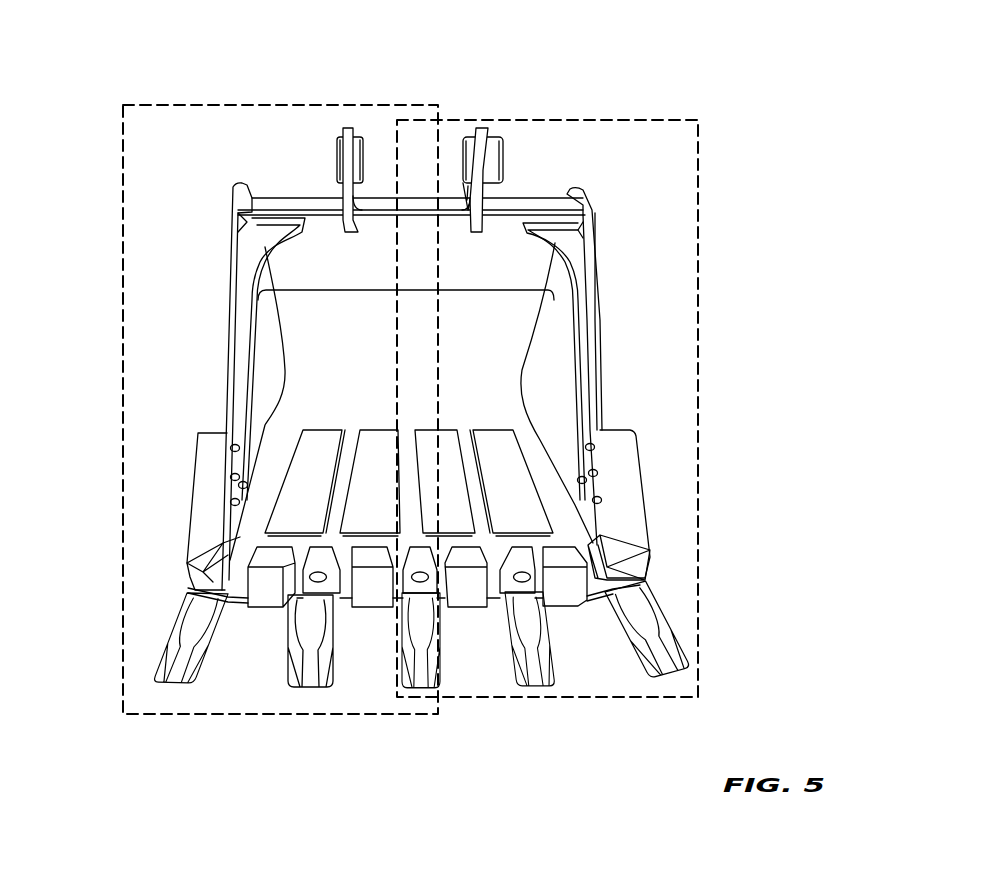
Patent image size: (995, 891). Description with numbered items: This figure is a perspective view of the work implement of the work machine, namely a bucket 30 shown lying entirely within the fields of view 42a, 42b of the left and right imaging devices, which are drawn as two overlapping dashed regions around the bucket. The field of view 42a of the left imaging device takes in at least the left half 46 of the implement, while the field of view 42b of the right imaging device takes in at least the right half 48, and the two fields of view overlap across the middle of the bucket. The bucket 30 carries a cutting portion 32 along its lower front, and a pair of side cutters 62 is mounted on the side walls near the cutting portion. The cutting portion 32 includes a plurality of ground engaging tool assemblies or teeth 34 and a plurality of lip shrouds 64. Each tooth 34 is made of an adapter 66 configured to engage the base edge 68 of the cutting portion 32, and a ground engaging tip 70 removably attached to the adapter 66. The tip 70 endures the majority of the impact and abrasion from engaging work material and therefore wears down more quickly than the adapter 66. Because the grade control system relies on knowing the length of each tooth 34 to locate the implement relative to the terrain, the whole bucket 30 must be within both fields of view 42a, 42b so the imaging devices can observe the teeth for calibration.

The bucket 30 is at (228, 224).
The cutting portion 32 is at (657, 565).
The tooth 34 is at (673, 672).
The field of view 42a is at (232, 105).
The field of view 42b is at (588, 120).
The left half 46 is at (203, 310).
The right half 48 is at (613, 312).
The side cutter 62 is at (628, 488).
The lip shroud 64 is at (267, 586).
The adapter 66 is at (543, 590).
The base edge 68 is at (343, 598).
The ground engaging tip 70 is at (550, 678).